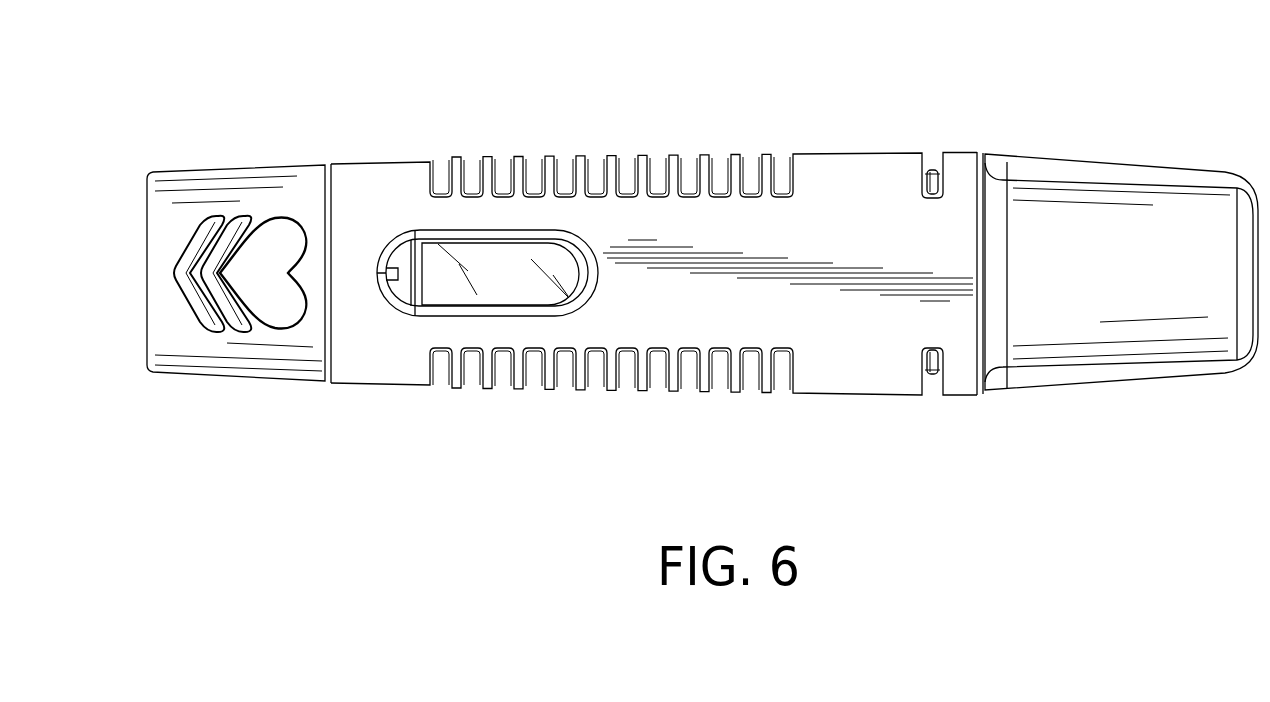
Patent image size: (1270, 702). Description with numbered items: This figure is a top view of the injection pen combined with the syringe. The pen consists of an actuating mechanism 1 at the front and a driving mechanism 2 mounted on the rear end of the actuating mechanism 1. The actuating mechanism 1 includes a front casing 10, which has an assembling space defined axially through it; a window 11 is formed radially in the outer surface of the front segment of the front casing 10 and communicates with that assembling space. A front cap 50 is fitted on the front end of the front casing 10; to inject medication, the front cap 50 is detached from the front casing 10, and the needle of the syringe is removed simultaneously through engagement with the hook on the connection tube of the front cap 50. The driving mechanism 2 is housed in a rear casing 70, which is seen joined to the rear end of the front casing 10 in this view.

The actuating mechanism 1 is at (565, 257).
The driving mechanism 2 is at (1121, 263).
The front casing 10 is at (862, 406).
The window 11 is at (480, 250).
The front cap 50 is at (230, 148).
The rear casing 70 is at (1122, 394).